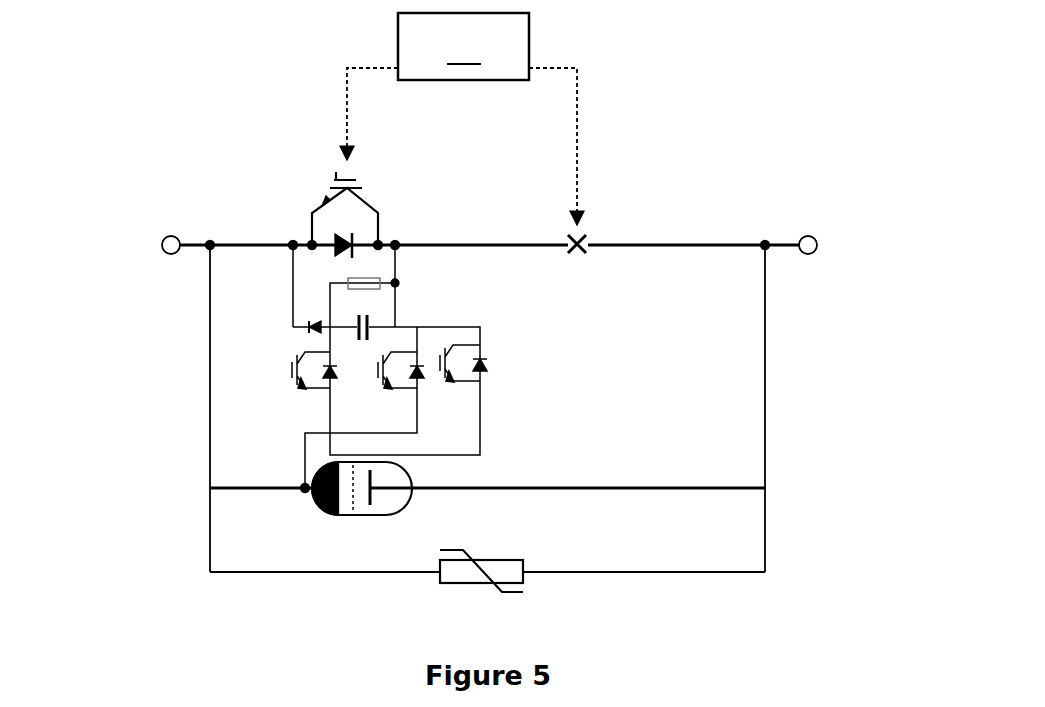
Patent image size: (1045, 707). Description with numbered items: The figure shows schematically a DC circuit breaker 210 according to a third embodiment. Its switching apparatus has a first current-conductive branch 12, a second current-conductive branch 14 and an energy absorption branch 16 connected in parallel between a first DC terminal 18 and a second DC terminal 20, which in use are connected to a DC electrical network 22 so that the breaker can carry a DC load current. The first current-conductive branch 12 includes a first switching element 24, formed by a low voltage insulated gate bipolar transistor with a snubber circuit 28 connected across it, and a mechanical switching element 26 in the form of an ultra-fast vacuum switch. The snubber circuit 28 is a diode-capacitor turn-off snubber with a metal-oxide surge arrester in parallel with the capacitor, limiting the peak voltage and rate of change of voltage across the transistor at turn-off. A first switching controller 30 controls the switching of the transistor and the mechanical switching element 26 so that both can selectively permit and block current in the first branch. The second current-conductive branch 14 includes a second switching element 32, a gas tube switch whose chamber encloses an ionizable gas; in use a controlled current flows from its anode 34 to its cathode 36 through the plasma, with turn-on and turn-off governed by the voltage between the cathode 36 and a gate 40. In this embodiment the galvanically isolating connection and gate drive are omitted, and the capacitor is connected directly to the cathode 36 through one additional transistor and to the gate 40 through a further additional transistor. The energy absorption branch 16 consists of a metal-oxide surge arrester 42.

The DC circuit breaker 210 is at (263, 148).
The first current-conductive branch 12 is at (642, 258).
The second current-conductive branch 14 is at (656, 480).
The energy absorption branch 16 is at (667, 567).
The first DC terminal 18 is at (209, 242).
The second DC terminal 20 is at (762, 238).
The DC electrical network 22 is at (150, 245).
The first switching element 24 is at (365, 202).
The mechanical switching element 26 is at (601, 228).
The snubber circuit 28 is at (388, 303).
The first switching controller 30 is at (462, 119).
The second switching element 32 is at (365, 556).
The anode 34 is at (373, 500).
The cathode 36 is at (320, 508).
The gate 40 is at (350, 503).
The metal-oxide surge arrester 42 is at (522, 557).